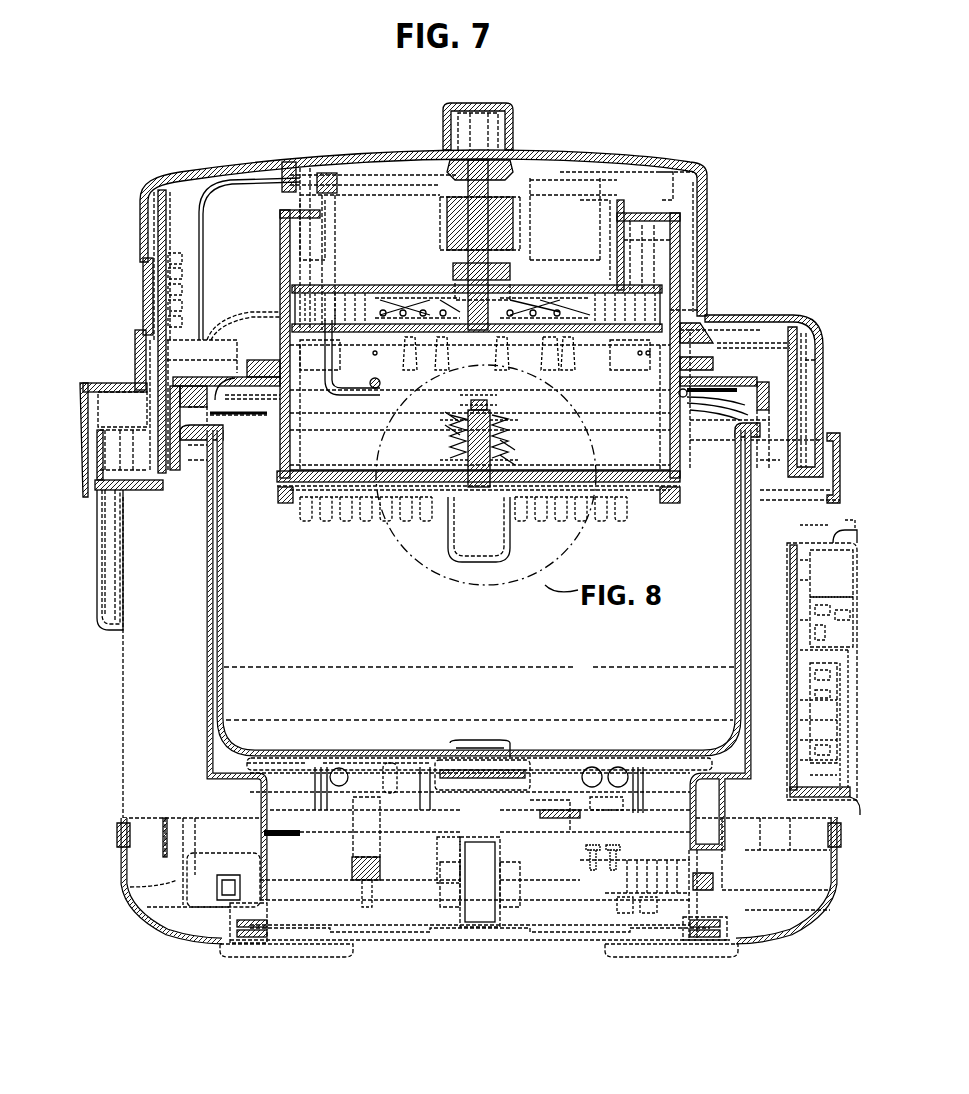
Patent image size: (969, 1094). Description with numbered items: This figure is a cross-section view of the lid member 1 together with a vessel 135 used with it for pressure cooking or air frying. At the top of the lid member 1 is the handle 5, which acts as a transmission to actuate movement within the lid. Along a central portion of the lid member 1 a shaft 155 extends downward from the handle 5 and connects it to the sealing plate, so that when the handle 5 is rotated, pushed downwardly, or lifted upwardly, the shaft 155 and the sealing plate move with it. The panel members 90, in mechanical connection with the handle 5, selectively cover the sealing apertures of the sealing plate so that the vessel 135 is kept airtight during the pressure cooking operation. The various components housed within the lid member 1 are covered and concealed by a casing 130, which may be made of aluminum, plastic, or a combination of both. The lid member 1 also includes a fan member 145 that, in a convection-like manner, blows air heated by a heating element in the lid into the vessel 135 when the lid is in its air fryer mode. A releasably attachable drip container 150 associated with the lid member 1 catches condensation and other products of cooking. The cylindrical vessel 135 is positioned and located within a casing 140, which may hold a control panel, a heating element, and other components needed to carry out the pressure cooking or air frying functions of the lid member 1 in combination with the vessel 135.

The lid member 1 is at (760, 240).
The handle 5 is at (446, 128).
The panel members 90 is at (340, 492).
The casing 130 is at (671, 164).
The vessel 135 is at (203, 692).
The casing 140 is at (165, 800).
The fan member 145 is at (562, 290).
The drip container 150 is at (107, 598).
The shaft 155 is at (492, 215).